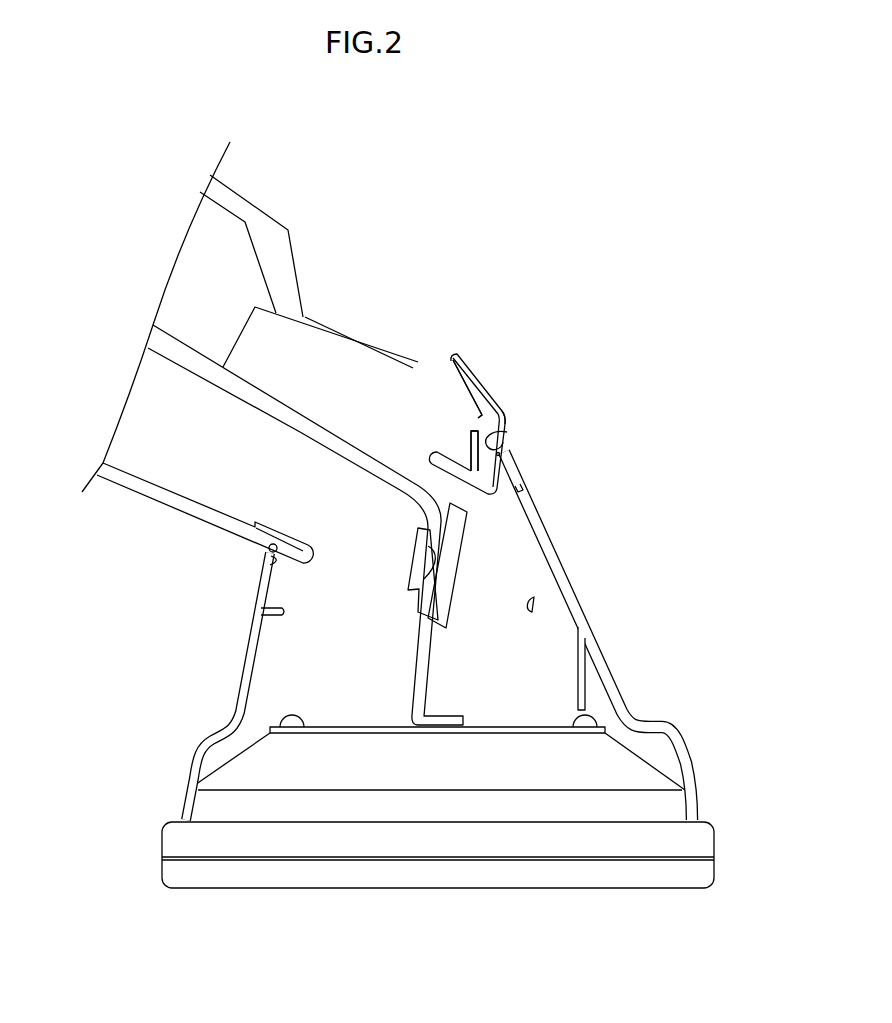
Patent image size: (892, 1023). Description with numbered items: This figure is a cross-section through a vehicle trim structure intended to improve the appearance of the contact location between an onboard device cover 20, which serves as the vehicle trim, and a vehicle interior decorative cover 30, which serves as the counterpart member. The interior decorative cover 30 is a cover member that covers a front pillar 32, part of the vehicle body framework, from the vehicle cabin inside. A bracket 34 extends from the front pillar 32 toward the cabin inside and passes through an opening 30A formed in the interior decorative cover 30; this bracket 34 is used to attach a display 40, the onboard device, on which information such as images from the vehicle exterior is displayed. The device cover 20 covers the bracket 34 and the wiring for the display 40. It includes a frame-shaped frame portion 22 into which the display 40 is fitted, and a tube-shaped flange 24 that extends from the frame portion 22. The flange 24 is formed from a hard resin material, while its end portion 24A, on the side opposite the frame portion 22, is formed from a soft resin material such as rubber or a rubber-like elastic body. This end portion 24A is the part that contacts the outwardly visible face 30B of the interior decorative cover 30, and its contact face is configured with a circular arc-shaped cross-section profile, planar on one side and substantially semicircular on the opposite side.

The onboard device cover 20 is at (475, 636).
The frame portion 22 is at (690, 757).
The flange 24 is at (553, 540).
The end portion 24A is at (508, 432).
The vehicle interior decorative cover 30 is at (486, 381).
The opening 30A is at (476, 496).
The outwardly visible face 30B is at (508, 418).
The front pillar 32 is at (229, 211).
The bracket 34 is at (336, 452).
The display 40 is at (544, 889).